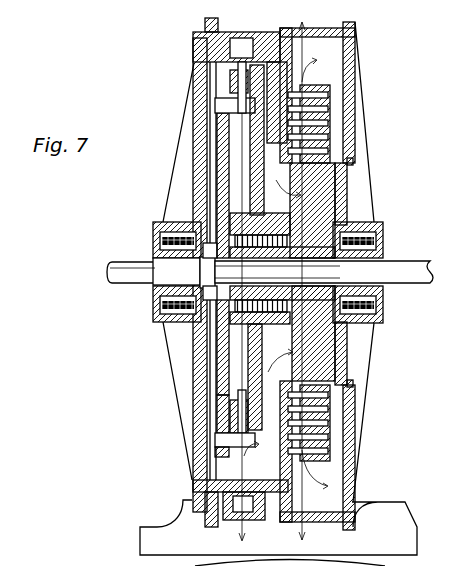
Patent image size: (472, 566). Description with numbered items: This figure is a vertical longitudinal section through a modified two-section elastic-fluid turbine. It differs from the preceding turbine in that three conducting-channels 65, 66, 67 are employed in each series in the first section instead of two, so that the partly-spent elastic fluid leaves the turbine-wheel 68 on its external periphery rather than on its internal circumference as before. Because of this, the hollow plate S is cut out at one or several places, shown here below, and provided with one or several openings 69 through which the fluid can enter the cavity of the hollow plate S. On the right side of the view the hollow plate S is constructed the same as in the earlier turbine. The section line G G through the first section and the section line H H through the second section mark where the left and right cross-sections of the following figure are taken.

The conducting-channel 65 is at (231, 185).
The conducting-channel 66 is at (233, 87).
The conducting-channel 67 is at (232, 404).
The turbine-wheel 68 is at (219, 352).
The opening 69 is at (240, 430).
The section line G G is at (230, 282).
The section line H H is at (313, 282).
The hollow plate S is at (278, 356).